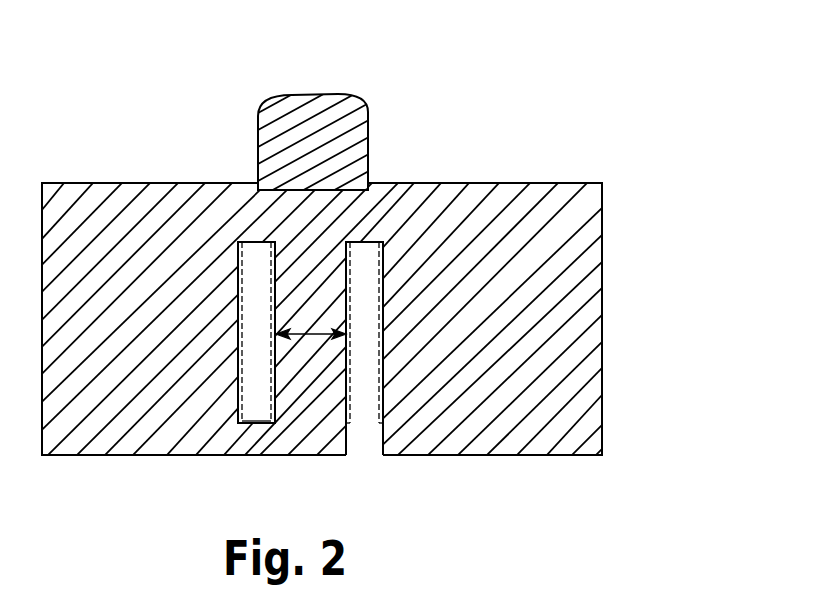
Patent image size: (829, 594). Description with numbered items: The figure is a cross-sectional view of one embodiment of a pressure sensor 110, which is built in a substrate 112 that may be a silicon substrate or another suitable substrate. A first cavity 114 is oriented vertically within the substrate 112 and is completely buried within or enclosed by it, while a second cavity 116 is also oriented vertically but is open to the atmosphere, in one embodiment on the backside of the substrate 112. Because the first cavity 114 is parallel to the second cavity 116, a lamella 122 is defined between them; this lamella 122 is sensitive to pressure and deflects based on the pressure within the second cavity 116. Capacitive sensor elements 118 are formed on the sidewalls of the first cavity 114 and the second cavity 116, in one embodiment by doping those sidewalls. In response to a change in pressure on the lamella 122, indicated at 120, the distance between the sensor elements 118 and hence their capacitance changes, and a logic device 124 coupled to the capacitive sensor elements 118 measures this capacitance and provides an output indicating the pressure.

The pressure sensor 110 is at (463, 52).
The substrate 112 is at (602, 322).
The first cavity 114 is at (255, 423).
The second cavity 116 is at (363, 413).
The capacitive sensor elements 118 is at (244, 268).
The change in pressure 120 is at (310, 336).
The lamella 122 is at (290, 373).
The logic device 124 is at (368, 143).